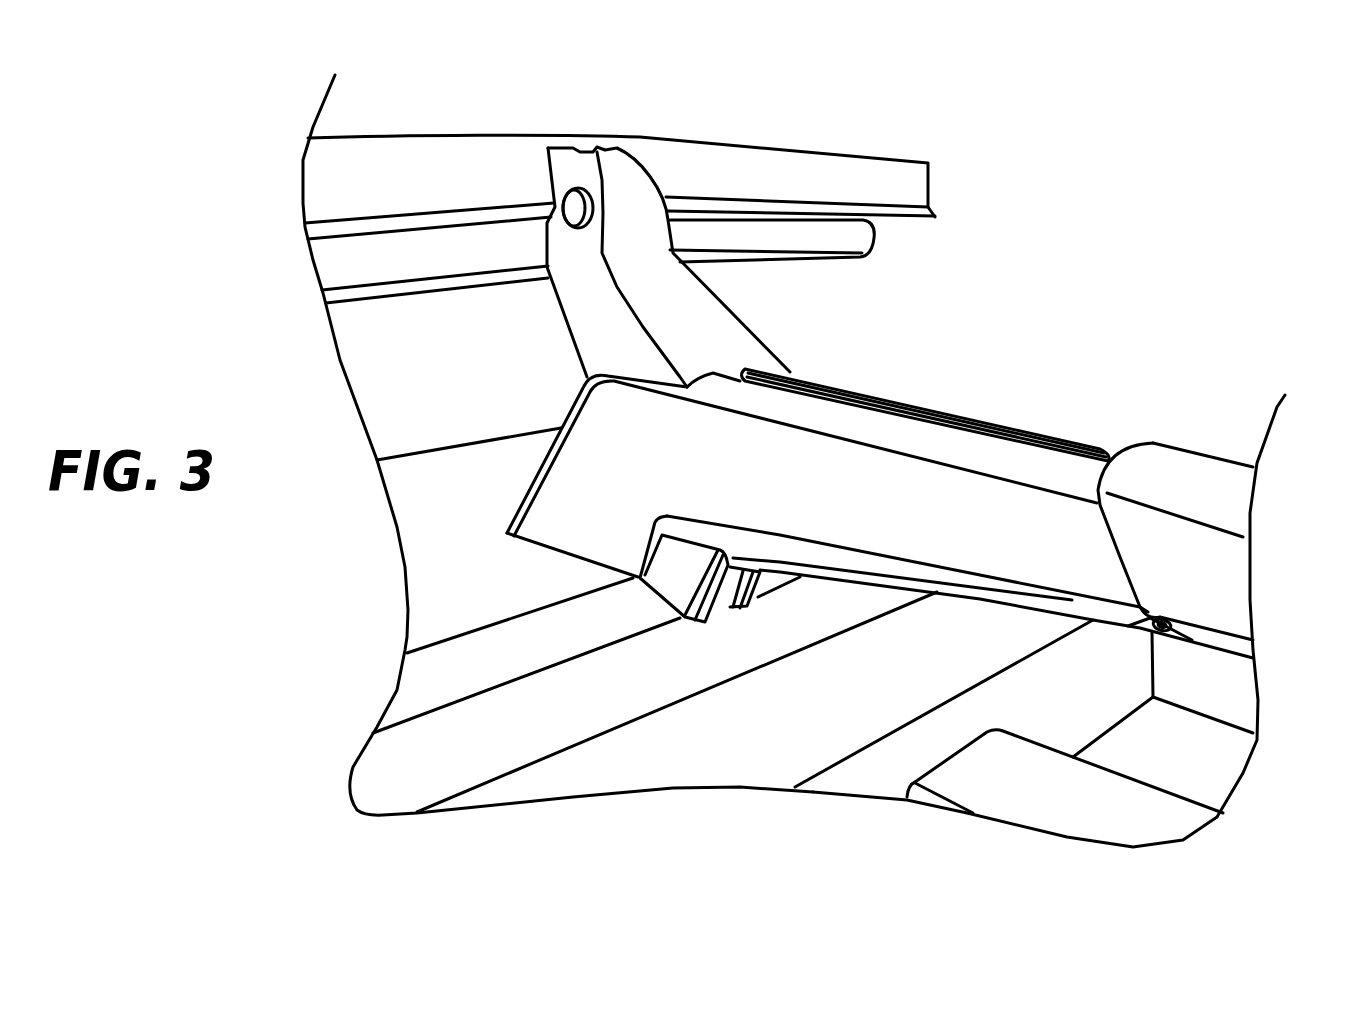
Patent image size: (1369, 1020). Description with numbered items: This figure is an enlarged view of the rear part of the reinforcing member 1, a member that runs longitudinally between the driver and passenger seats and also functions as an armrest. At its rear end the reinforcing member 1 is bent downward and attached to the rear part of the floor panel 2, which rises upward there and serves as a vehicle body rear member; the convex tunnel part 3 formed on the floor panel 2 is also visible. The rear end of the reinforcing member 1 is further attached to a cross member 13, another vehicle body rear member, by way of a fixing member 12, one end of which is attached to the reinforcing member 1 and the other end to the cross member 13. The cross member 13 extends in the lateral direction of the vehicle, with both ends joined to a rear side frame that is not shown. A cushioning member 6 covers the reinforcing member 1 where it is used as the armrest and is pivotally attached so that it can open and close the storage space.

The reinforcing member 1 is at (885, 532).
The floor panel 2 is at (447, 577).
The convex tunnel part 3 is at (1080, 792).
The cushioning member 6 is at (1223, 493).
The fixing member 12 is at (627, 203).
The cross member 13 is at (325, 190).